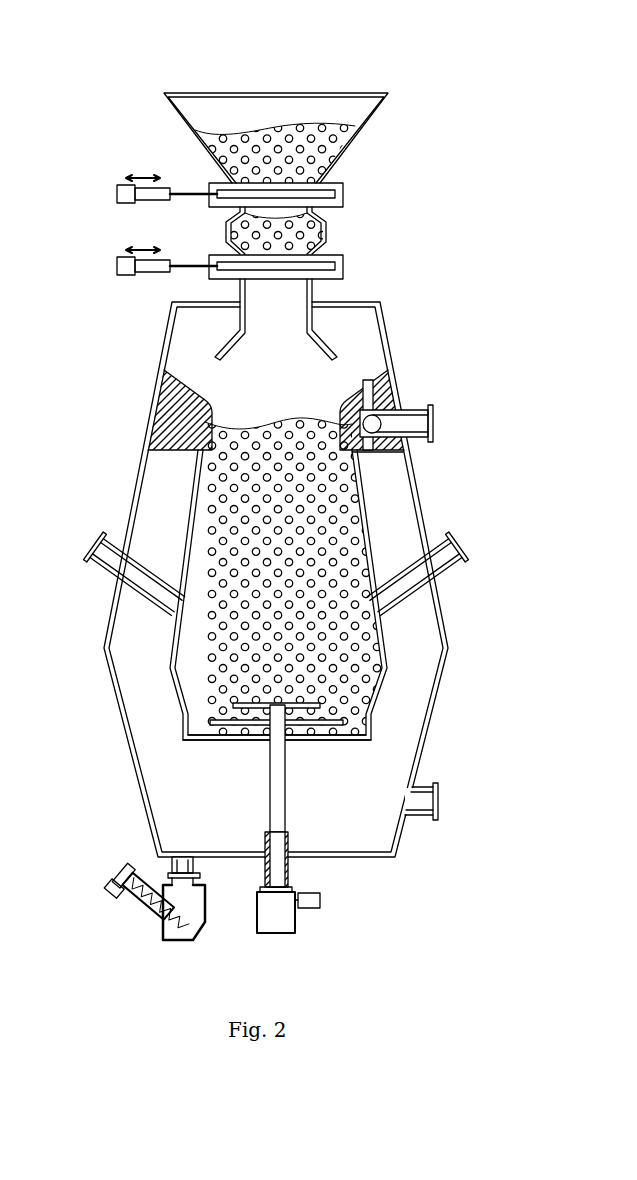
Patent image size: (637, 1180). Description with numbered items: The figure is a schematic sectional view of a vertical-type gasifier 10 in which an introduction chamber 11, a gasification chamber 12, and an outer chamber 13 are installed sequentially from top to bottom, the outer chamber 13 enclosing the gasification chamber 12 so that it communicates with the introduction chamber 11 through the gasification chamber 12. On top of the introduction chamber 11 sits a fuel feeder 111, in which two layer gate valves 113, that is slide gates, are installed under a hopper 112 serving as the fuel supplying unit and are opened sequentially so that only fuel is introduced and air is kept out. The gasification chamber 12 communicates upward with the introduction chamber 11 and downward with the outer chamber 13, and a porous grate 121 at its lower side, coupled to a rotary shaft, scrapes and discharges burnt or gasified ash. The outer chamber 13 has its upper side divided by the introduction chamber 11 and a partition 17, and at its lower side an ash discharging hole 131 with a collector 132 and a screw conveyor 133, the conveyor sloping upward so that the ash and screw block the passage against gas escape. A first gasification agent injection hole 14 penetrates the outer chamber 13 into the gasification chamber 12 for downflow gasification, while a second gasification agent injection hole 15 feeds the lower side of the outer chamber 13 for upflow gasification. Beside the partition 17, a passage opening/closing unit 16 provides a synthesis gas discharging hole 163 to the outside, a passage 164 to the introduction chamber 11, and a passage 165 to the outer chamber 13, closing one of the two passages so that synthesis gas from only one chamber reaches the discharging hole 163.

The gasifier 10 is at (470, 62).
The introduction chamber 11 is at (190, 357).
The fuel feeder 111 is at (103, 72).
The hopper 112 is at (173, 135).
The two layer gate valves 113 is at (117, 194).
The gasification chamber 12 is at (203, 673).
The grate 121 is at (347, 742).
The outer chamber 13 is at (190, 765).
The ash discharging hole 131 is at (185, 866).
The collector 132 is at (203, 905).
The screw conveyor 133 is at (202, 907).
The first gasification agent injection hole 14 is at (101, 553).
The second gasification agent injection hole 15 is at (428, 800).
The passage opening/closing unit 16 is at (470, 397).
The synthesis gas discharging hole 163 is at (410, 423).
The passage communicated with the introduction chamber 164 is at (366, 397).
The passage communicated with the outer chamber 165 is at (395, 467).
The partition 17 is at (175, 428).